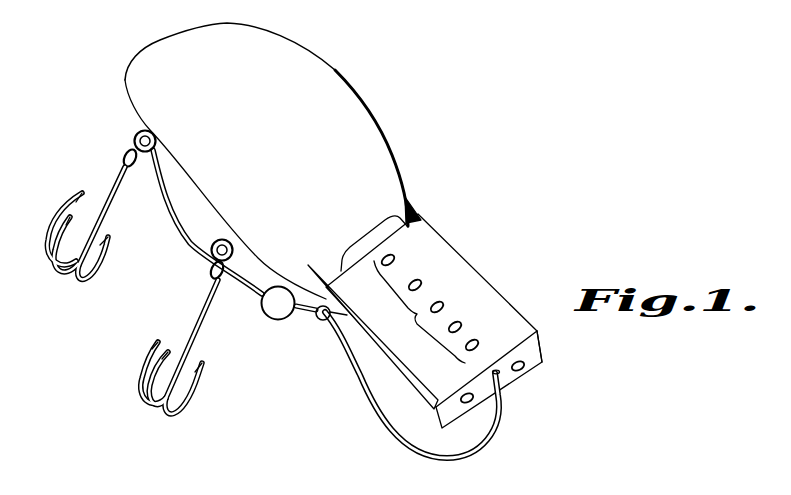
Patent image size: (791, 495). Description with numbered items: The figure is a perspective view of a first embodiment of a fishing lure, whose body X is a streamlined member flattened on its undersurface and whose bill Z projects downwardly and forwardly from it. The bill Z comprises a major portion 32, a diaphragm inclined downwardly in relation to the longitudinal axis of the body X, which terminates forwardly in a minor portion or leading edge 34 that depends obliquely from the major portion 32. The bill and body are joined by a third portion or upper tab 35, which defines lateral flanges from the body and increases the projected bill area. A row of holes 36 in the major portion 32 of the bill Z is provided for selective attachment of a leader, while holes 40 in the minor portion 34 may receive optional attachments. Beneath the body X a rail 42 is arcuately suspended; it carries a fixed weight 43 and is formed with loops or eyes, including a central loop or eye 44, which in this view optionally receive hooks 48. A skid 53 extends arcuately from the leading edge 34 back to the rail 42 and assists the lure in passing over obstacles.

The body of the lure X is at (295, 153).
The bill Z is at (457, 242).
The major portion 32 is at (521, 341).
The minor portion or leading edge 34 is at (535, 348).
The upper tab 35 is at (326, 276).
The holes 36 is at (427, 308).
The holes 40 is at (519, 372).
The rail 42 is at (186, 243).
The fixed weight 43 is at (282, 320).
The central loop or eye 44 is at (232, 285).
The hooks 48 is at (143, 373).
The skid 53 is at (376, 410).